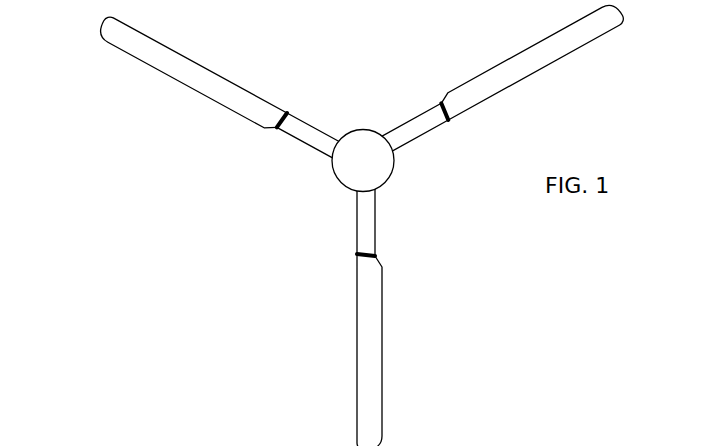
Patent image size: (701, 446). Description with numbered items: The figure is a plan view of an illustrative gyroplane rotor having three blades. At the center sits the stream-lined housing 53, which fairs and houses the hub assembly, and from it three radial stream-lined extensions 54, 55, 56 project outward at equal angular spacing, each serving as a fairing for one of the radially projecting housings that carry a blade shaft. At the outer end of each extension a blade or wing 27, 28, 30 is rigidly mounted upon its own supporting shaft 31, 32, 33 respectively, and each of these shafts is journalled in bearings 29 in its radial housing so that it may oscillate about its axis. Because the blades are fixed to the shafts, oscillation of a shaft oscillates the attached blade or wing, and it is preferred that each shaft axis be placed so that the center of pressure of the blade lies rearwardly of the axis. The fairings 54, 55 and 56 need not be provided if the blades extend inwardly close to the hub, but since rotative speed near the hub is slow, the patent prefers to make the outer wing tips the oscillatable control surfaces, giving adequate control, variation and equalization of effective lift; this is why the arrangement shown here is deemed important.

The blade or wing 27 is at (530, 70).
The blade or wing 28 is at (184, 62).
The bearings 29 is at (676, 445).
The blade or wing 30 is at (393, 310).
The supporting shaft 31 is at (443, 122).
The supporting shaft 32 is at (290, 113).
The supporting shaft 33 is at (360, 260).
The stream-lined housing 53 is at (347, 188).
The radial stream-lined extension 54 is at (305, 147).
The radial stream-lined extension 55 is at (373, 230).
The radial stream-lined extension 56 is at (408, 123).